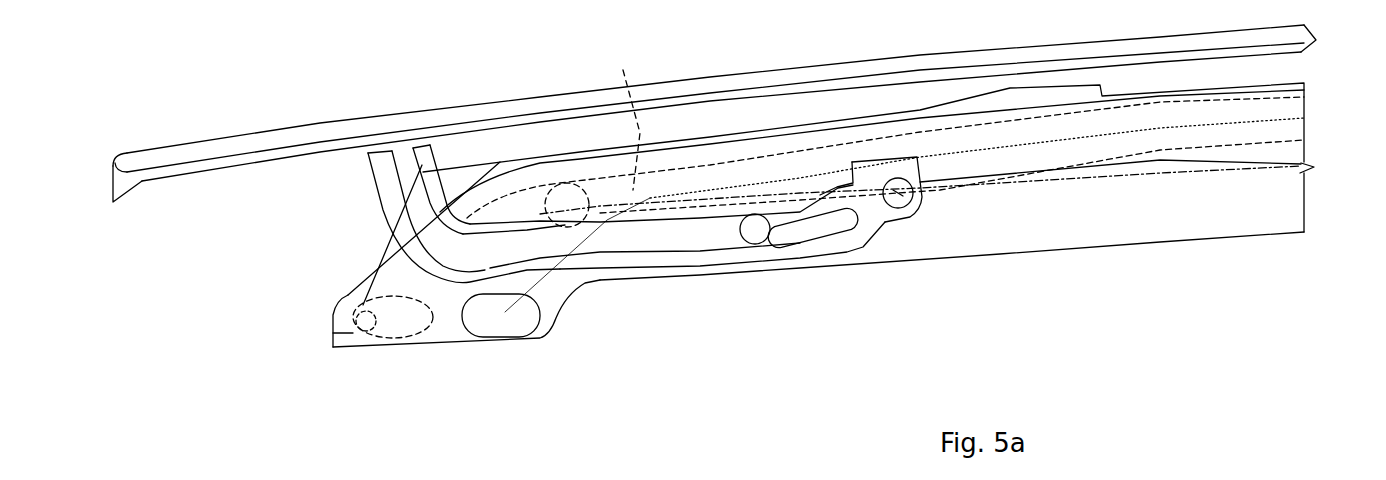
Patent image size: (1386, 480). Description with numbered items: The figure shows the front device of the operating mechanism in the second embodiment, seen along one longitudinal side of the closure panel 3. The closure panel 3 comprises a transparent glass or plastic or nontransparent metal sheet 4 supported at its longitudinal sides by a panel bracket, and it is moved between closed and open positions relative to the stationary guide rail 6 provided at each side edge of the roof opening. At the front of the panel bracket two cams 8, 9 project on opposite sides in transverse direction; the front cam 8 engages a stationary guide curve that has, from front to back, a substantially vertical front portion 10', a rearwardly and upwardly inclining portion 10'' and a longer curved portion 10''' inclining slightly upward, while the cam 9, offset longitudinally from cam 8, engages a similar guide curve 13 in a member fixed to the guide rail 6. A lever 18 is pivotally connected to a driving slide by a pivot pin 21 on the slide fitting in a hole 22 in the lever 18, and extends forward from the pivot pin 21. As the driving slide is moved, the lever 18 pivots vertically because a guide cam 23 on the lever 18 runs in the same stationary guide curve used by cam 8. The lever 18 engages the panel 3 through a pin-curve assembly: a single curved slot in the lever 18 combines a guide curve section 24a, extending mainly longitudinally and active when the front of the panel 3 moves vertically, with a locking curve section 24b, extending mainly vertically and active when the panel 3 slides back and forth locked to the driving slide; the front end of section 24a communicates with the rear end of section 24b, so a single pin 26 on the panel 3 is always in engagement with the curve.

The closure panel 3 is at (276, 144).
The sheet 4 is at (167, 160).
The stationary guide rail 6 is at (1308, 234).
The front cam 8 is at (308, 338).
The cam 9 is at (522, 316).
The substantially vertical front portion 10' is at (396, 367).
The rearwardly and upwardly inclining portion 10'' is at (324, 281).
The longer curved portion 10''' is at (623, 106).
The guide curve 13 is at (603, 281).
The lever 18 is at (707, 264).
The pivot pin 21 is at (898, 193).
The hole 22 is at (898, 193).
The guide cam 23 is at (577, 160).
The guide curve section 24a is at (683, 233).
The locking curve section 24b is at (397, 160).
The pin 26 is at (755, 229).